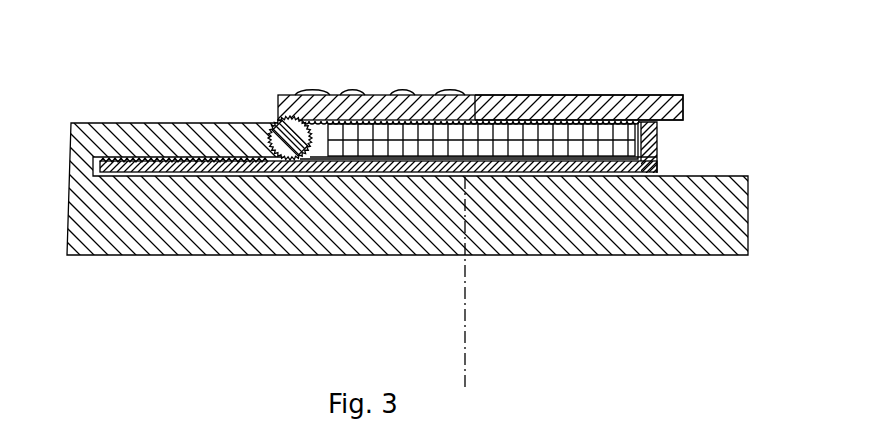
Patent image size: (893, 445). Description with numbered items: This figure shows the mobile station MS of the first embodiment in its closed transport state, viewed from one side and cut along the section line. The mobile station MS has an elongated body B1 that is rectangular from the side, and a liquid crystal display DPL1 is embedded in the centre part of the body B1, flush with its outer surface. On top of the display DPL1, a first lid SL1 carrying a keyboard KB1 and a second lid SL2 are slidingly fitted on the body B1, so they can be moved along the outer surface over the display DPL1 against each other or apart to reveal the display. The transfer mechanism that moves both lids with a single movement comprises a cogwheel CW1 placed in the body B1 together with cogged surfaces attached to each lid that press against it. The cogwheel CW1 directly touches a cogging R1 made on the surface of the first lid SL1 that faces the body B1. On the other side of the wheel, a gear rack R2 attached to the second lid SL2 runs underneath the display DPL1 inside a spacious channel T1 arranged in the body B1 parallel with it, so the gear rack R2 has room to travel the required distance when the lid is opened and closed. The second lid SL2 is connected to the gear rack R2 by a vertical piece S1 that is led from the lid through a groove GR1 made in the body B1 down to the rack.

The mobile station MS is at (68, 325).
The body B1 is at (749, 177).
The channel T1 is at (181, 158).
The gear rack R2 is at (140, 156).
The cogwheel CW1 is at (273, 121).
The keyboard KB1 is at (293, 94).
The first lid SL1 is at (332, 92).
The second lid SL2 is at (512, 95).
The cogging R1 is at (418, 121).
The liquid crystal display DPL1 is at (610, 128).
The vertical piece S1 is at (697, 147).
The groove GR1 is at (657, 146).